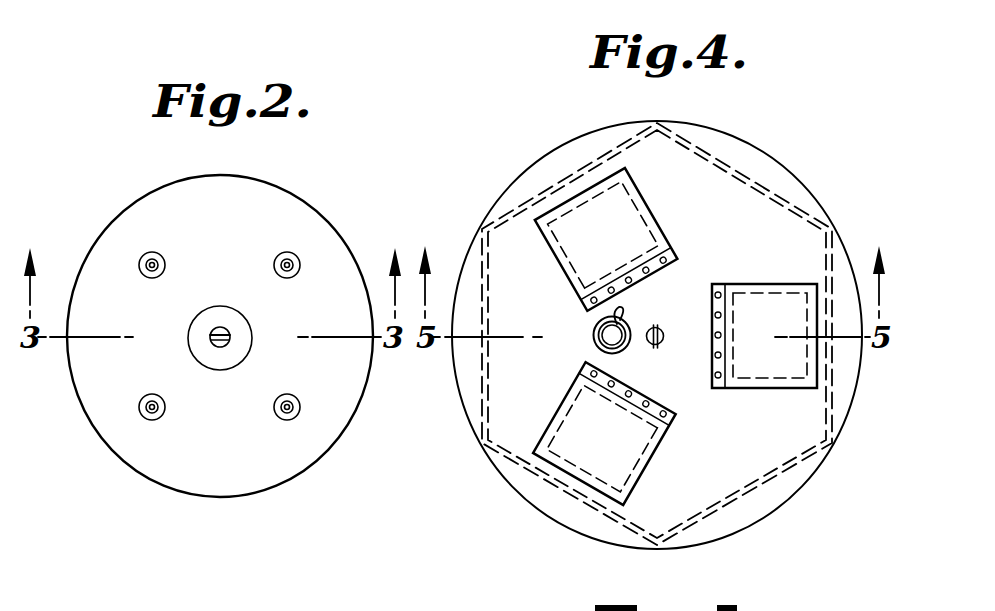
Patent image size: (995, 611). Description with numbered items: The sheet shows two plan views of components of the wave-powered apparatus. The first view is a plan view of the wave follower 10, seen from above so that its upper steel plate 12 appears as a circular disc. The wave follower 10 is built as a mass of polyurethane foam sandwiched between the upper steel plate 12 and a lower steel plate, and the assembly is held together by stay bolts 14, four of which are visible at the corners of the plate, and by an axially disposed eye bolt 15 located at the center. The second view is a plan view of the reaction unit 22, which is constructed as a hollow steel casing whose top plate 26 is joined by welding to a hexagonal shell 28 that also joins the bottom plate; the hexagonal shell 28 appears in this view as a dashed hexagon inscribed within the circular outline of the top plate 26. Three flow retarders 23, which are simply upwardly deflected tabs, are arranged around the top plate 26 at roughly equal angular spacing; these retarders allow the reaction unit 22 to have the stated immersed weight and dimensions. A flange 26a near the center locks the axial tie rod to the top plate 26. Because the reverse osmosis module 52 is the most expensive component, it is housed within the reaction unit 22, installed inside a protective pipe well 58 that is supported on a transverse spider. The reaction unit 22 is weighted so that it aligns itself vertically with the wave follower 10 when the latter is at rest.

In FIG. 2, the wave follower 10 is at (108, 462).
In FIG. 2, the upper steel plate 12 is at (316, 433).
In FIG. 2, the stay bolts 14 is at (273, 262).
In FIG. 2, the eye bolt 15 is at (217, 344).
In FIG. 4, the reaction unit 22 is at (518, 512).
In FIG. 4, the flow retarders 23 is at (633, 243).
In FIG. 4, the top plate 26 is at (768, 496).
In FIG. 4, the flange 26a is at (683, 317).
In FIG. 4, the hexagonal shell 28 is at (803, 478).
In FIG. 4, the reverse osmosis module 52 is at (594, 332).
In FIG. 4, the protective pipe well 58 is at (595, 338).